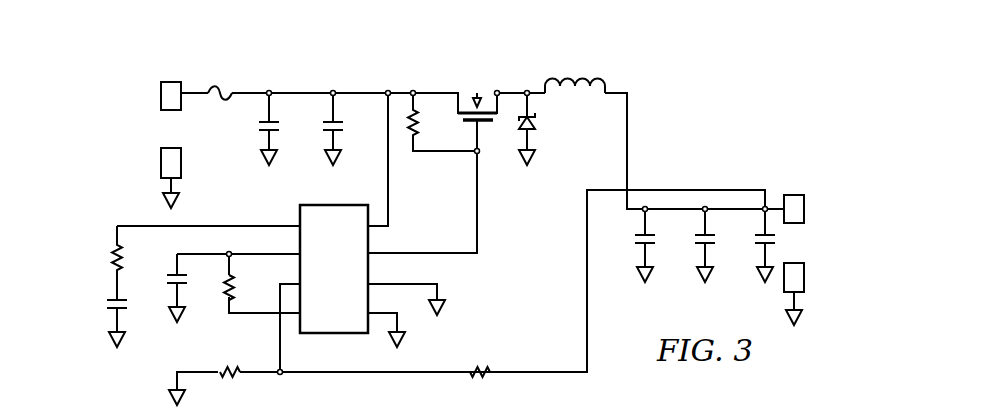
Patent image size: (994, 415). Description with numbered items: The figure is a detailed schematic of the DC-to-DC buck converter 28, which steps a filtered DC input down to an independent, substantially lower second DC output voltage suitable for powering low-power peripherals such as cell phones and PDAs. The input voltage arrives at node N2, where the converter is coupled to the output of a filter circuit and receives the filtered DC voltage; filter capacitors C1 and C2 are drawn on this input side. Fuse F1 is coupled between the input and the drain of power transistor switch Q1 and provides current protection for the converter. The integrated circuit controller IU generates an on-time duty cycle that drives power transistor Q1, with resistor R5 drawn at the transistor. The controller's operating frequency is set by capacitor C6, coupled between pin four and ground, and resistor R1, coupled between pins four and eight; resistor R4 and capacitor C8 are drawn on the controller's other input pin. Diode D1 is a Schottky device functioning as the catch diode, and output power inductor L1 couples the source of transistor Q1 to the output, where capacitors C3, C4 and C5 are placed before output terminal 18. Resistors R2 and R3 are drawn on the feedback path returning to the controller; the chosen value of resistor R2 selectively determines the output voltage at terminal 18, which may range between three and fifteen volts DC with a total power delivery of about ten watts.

The DC-to-DC buck converter 28 is at (486, 230).
The output terminal 18 is at (794, 194).
The node N2 is at (171, 84).
The fuse F1 is at (221, 107).
The power transistor switch Q1 is at (455, 111).
The resistor R5 is at (442, 122).
The capacitor C1 is at (281, 129).
The capacitor C2 is at (346, 129).
The catch diode D1 is at (541, 129).
The output power inductor L1 is at (575, 75).
The capacitor C3 is at (632, 245).
The capacitor C4 is at (692, 245).
The capacitor C5 is at (752, 245).
The integrated circuit controller IU is at (334, 269).
The resistor R4 is at (129, 263).
The capacitor C8 is at (129, 321).
The capacitor C6 is at (189, 288).
The resistor R1 is at (242, 289).
The resistor R2 is at (229, 357).
The resistor R3 is at (477, 356).